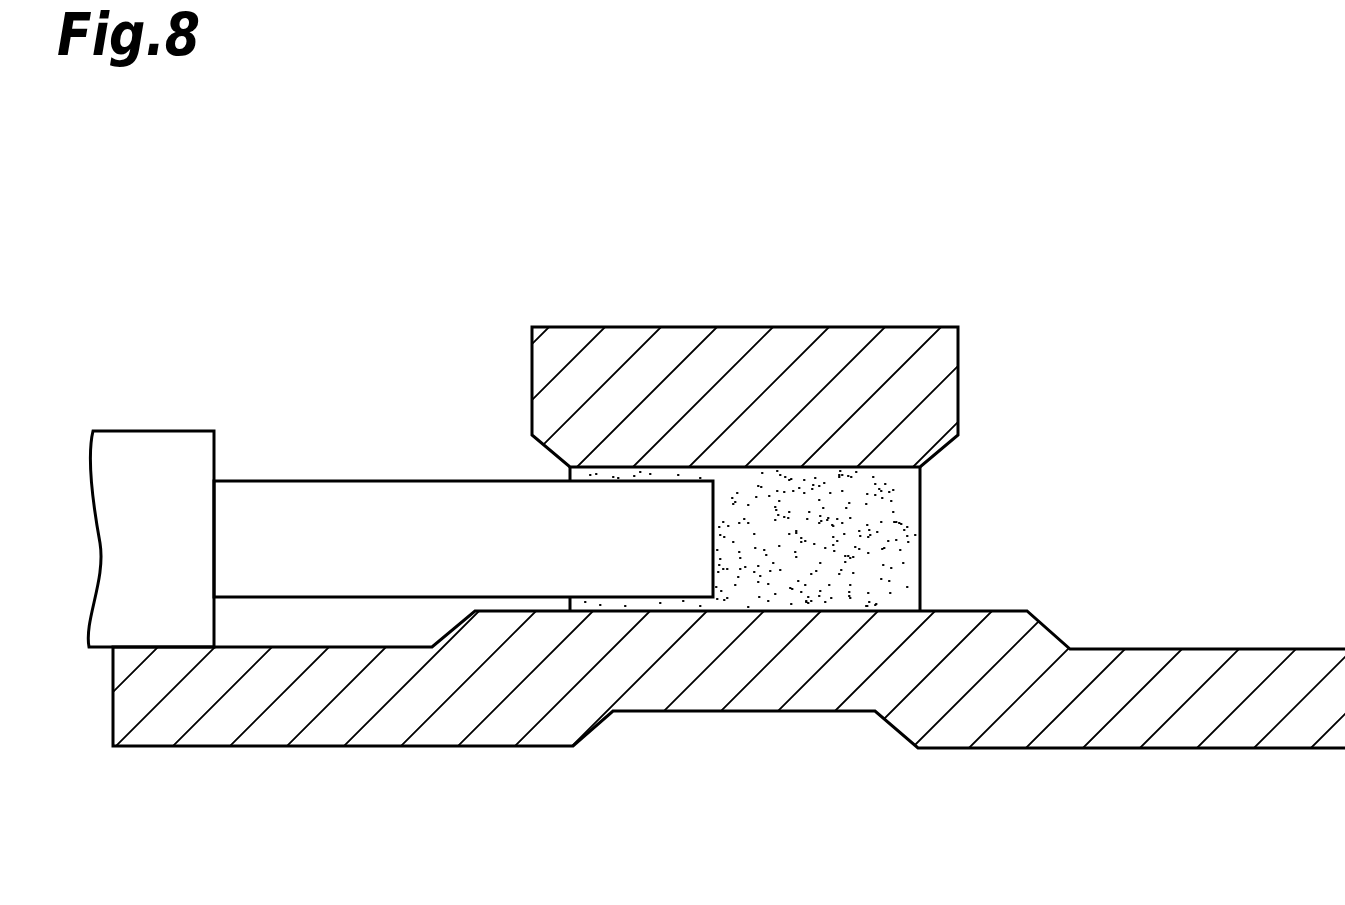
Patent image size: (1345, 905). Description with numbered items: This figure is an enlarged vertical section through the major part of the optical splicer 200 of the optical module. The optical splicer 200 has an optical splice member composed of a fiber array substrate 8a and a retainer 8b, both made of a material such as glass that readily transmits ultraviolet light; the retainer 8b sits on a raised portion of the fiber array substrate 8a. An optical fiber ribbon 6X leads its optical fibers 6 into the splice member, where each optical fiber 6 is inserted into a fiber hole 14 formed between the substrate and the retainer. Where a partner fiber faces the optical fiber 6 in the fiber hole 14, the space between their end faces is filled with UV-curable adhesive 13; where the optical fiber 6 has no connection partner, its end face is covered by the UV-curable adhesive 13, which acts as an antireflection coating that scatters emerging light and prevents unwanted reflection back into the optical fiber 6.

The optical splicer 200 is at (803, 200).
The fiber array substrate 8a is at (992, 725).
The retainer 8b is at (847, 352).
The optical fiber ribbon 6X is at (158, 450).
The optical fiber 6 is at (362, 508).
The UV-curable adhesive 13 is at (885, 549).
The fiber hole 14 is at (887, 463).